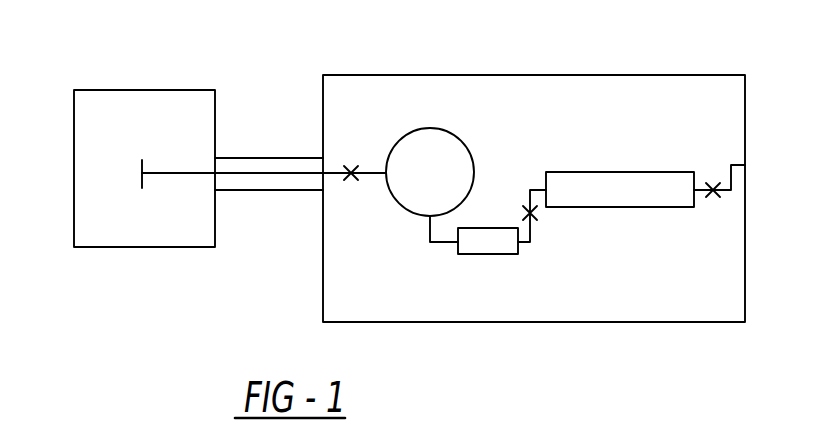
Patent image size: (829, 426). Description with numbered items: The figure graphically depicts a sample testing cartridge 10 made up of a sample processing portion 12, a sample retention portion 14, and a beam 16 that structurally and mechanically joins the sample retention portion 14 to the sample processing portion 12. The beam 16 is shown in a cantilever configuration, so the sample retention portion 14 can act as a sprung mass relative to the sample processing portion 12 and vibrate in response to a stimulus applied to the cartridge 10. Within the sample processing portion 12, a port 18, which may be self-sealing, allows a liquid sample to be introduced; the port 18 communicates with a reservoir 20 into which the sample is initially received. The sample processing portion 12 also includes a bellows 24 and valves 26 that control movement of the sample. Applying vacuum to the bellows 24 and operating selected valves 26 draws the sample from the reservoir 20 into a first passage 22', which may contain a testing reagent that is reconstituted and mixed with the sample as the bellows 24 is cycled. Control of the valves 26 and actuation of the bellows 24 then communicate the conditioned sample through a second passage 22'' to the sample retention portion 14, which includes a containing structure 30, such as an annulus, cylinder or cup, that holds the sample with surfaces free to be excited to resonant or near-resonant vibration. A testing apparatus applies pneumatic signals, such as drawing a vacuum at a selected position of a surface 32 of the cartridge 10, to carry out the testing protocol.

The sample testing cartridge 10 is at (673, 75).
The sample processing portion 12 is at (573, 75).
The sample retention portion 14 is at (150, 89).
The beam 16 is at (280, 158).
The port 18 is at (745, 165).
The reservoir 20 is at (632, 208).
The first passage 22' is at (488, 283).
The second passage 22'' is at (264, 253).
The bellows 24 is at (457, 133).
The valves 26 is at (353, 181).
The containing structure 30 is at (140, 165).
The surface 32 is at (700, 297).